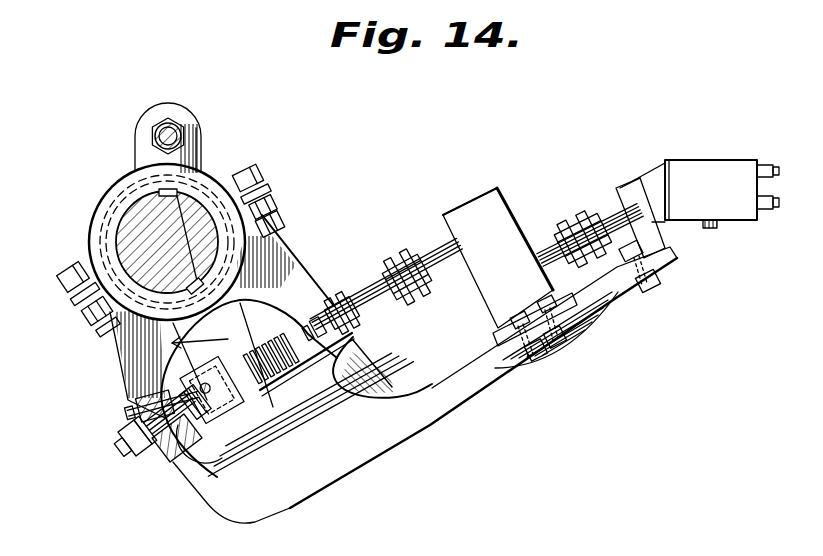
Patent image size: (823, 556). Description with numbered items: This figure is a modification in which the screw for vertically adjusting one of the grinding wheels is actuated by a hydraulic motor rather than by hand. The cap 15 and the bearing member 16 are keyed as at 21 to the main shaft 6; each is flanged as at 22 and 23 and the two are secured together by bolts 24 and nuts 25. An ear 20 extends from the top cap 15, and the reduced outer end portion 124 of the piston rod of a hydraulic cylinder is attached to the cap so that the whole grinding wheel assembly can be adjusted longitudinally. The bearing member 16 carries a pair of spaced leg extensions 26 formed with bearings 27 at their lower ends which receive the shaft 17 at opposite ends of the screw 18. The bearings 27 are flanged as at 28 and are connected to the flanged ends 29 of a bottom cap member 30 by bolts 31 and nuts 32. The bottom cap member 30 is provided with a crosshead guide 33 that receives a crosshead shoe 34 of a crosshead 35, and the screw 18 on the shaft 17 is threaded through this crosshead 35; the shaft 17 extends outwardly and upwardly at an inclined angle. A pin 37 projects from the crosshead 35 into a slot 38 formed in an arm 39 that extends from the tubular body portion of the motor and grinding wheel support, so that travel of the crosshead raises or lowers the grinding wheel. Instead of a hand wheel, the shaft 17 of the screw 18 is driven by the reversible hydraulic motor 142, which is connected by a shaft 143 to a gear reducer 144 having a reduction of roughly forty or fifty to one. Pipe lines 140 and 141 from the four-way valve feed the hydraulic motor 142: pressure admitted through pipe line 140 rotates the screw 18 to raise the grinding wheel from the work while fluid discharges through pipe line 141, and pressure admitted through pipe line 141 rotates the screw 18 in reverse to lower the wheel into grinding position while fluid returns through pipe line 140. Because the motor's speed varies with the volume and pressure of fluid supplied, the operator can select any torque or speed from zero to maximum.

The main shaft 6 is at (128, 223).
The cap 15 is at (125, 186).
The bearing member 16 is at (286, 254).
The shaft 17 is at (437, 240).
The screw 18 is at (370, 373).
The ear 20 is at (196, 121).
The key 21 is at (177, 192).
The flange 22 is at (267, 186).
The flange 23 is at (276, 206).
The bolt 24 is at (256, 170).
The nut 25 is at (283, 224).
The leg extension 26 is at (309, 282).
The bearing 27 is at (134, 394).
The flange 28 is at (352, 287).
The flanged end 29 is at (357, 337).
The bottom cap member 30 is at (346, 394).
The bolt 31 is at (307, 330).
The nut 32 is at (355, 350).
The crosshead guide 33 is at (308, 418).
The crosshead shoe 34 is at (184, 456).
The crosshead 35 is at (218, 445).
The pin 37 is at (268, 460).
The slot 38 is at (274, 451).
The arm 39 is at (135, 373).
The reduced outer end portion 124 is at (156, 133).
The pipe line 140 is at (774, 211).
The pipe line 141 is at (772, 164).
The hydraulic motor 142 is at (688, 163).
The shaft 143 is at (610, 217).
The gear reducer 144 is at (497, 197).